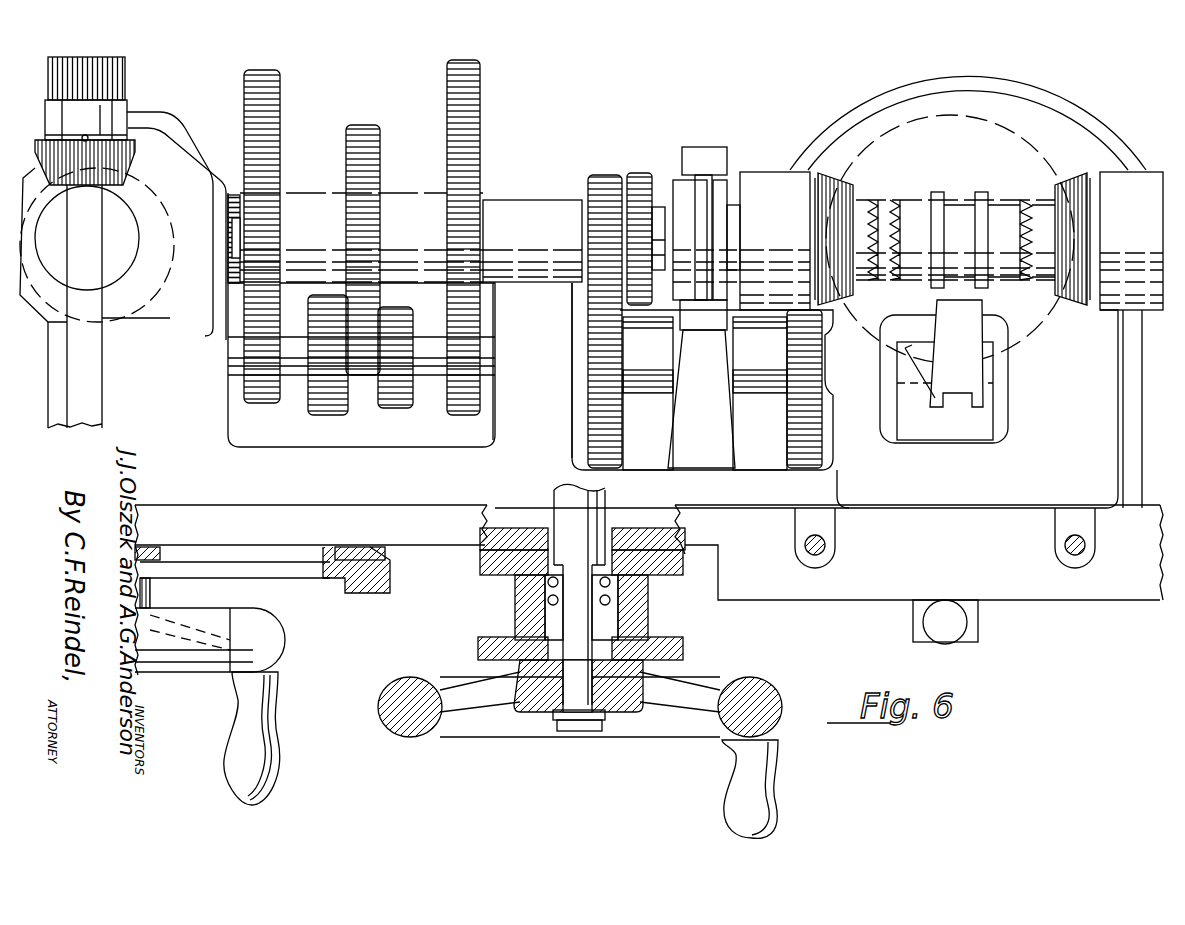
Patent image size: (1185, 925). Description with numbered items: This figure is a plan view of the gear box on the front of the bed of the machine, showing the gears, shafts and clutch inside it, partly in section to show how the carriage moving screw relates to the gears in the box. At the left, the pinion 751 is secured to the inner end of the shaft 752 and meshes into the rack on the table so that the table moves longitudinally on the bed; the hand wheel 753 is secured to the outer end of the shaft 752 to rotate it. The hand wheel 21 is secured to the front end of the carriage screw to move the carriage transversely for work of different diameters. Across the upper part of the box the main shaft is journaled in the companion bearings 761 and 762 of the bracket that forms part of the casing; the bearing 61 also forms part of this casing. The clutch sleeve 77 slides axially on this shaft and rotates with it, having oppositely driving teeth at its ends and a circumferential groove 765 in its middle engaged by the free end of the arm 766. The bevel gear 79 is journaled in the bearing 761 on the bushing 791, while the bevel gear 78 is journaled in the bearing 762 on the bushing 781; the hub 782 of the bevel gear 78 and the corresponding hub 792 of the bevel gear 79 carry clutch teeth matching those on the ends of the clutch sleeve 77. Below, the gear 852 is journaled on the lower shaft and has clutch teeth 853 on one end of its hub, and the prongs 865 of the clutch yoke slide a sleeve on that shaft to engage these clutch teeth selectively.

The pinion 751 is at (125, 80).
The shaft 752 is at (90, 338).
The cylinder 61 is at (532, 241).
The prongs 865 is at (701, 307).
The bearing 761 is at (775, 241).
The gear 852 is at (648, 393).
The clutch teeth 853 is at (797, 363).
The bevel gear 79 is at (850, 187).
The bushing 791 is at (888, 227).
The splined section 792 is at (877, 270).
The circumferential groove 765 is at (953, 203).
The clutch sleeve 77 is at (978, 203).
The hub 782 is at (1023, 203).
The bushing 781 is at (1037, 287).
The bevel gear 78 is at (1073, 300).
The bearing 762 is at (1131, 241).
The arm 766 is at (944, 371).
The hand wheel 21 is at (177, 653).
The hand wheel 753 is at (497, 725).